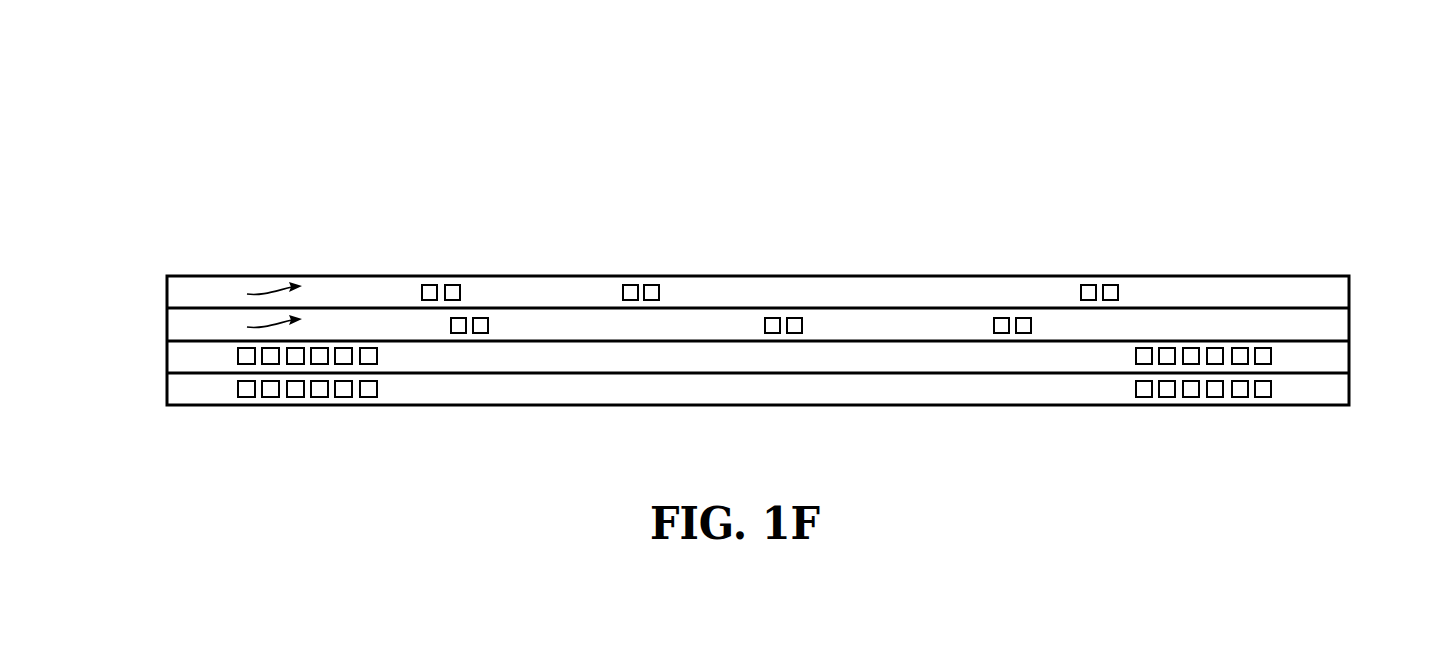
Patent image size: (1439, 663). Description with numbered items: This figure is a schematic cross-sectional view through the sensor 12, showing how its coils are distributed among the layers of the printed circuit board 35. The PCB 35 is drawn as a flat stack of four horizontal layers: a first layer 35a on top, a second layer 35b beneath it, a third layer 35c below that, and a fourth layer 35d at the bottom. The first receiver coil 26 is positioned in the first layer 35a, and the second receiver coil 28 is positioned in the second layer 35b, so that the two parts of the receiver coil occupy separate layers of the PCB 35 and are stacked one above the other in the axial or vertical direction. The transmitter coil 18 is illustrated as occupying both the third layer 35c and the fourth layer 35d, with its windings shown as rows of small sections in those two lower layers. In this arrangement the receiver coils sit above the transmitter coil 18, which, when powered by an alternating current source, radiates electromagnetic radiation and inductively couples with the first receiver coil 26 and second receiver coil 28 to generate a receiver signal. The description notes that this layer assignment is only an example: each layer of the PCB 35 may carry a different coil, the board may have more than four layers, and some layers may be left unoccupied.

The sensor 12 is at (243, 146).
The printed circuit board 35 is at (162, 252).
The first layer 35a is at (167, 292).
The second layer 35b is at (167, 320).
The third layer 35c is at (167, 363).
The fourth layer 35d is at (167, 397).
The first receiver coil 26 is at (262, 291).
The second receiver coil 28 is at (262, 324).
The transmitter coil 18 is at (297, 416).